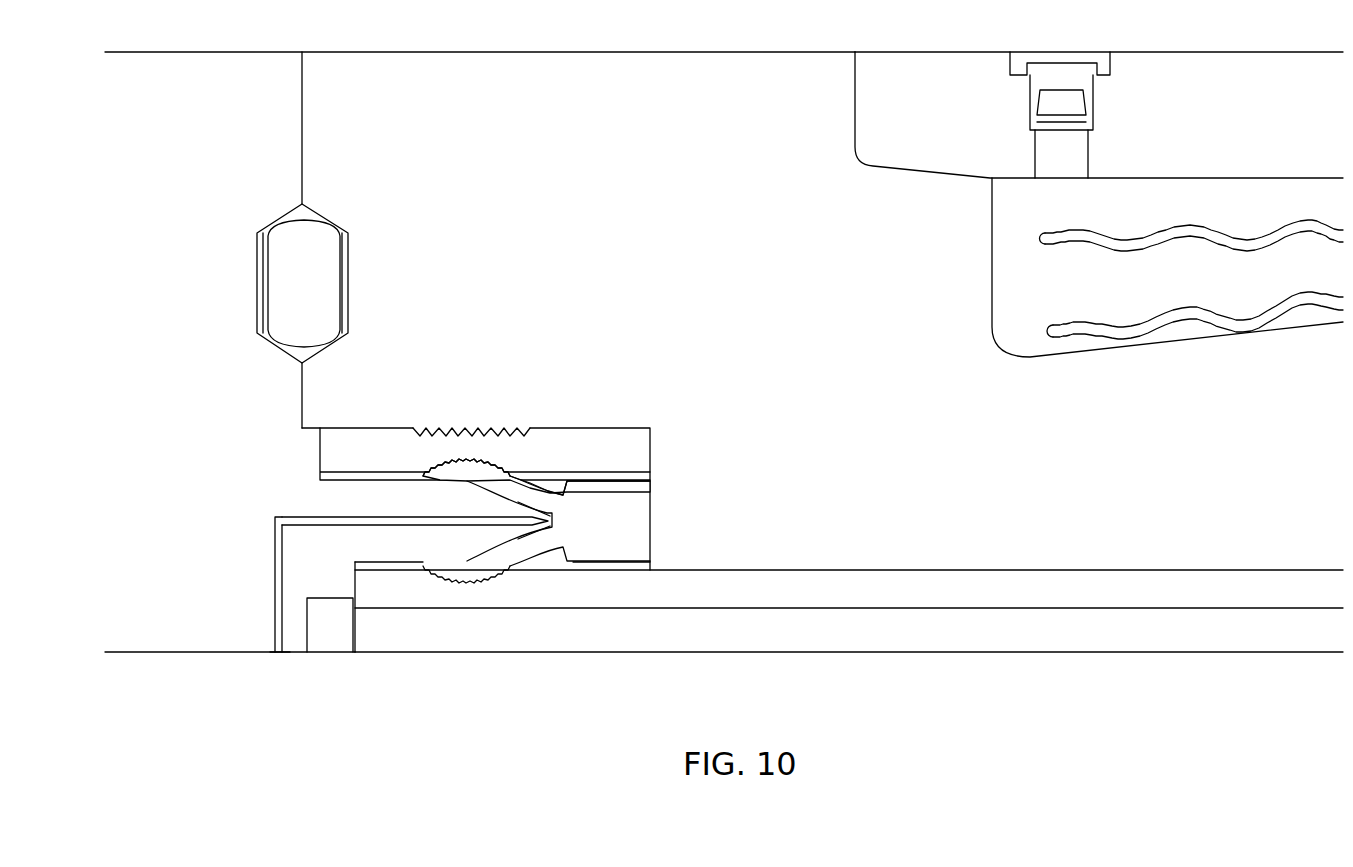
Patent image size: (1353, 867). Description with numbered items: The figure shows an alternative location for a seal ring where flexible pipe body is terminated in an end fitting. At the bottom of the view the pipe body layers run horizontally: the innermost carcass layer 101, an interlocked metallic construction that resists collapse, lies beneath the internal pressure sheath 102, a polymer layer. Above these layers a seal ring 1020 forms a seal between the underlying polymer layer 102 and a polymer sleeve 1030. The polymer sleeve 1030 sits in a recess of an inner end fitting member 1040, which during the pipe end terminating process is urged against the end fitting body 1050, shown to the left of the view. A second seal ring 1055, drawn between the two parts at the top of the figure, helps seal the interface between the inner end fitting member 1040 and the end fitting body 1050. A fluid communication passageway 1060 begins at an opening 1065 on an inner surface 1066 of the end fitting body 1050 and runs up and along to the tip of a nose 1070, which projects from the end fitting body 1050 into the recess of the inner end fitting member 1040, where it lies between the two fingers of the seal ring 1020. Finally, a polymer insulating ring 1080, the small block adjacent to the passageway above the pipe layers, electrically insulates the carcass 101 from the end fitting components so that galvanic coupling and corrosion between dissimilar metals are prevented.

The carcass layer 101 is at (997, 635).
The internal pressure sheath 102 is at (1123, 597).
The seal ring 1020 is at (640, 507).
The polymer sleeve 1030 is at (582, 445).
The inner end fitting member 1040 is at (676, 266).
The end fitting body 1050 is at (173, 356).
The seal ring 1055 is at (327, 272).
The fluid communication passageway 1060 is at (275, 558).
The opening 1065 is at (275, 652).
The inner surface 1066 is at (180, 652).
The nose 1070 is at (444, 511).
The polymer insulating ring 1080 is at (330, 633).